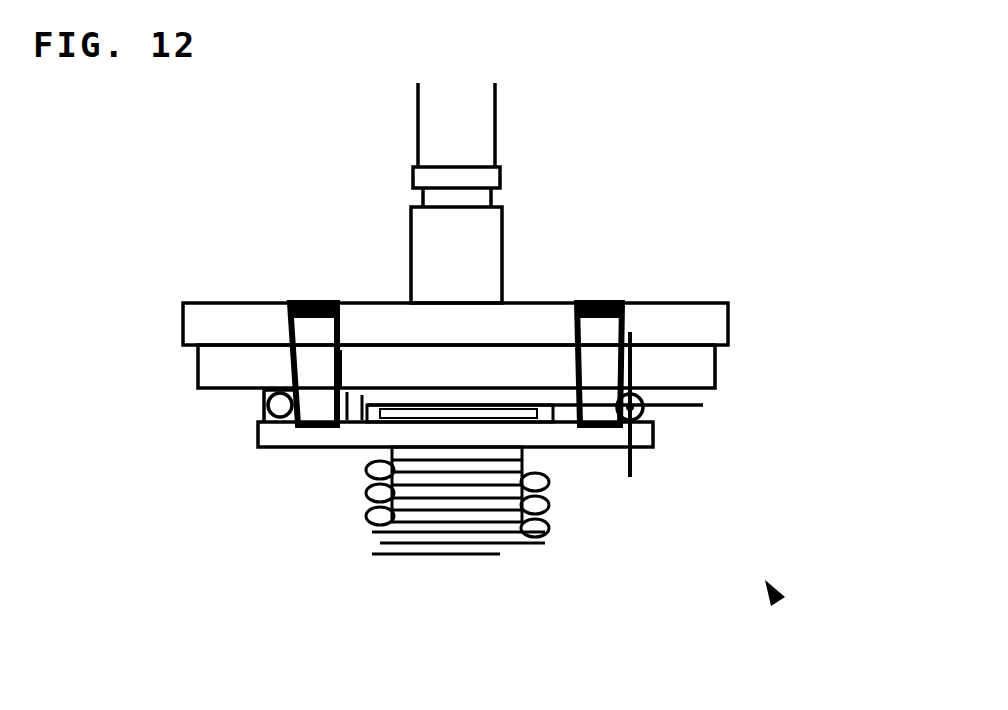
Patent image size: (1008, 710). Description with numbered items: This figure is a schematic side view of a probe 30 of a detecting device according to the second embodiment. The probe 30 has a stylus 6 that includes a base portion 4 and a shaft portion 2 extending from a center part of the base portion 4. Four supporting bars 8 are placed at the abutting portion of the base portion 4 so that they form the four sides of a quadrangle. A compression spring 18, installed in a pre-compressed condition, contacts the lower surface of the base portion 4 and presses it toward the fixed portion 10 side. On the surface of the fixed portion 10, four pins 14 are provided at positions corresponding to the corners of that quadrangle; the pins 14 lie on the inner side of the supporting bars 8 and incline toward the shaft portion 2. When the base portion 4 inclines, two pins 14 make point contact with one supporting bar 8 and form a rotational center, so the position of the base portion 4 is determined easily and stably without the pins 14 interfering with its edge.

The shaft portion 2 is at (440, 259).
The base portion 4 is at (310, 437).
The stylus 6 is at (125, 247).
The supporting bars 8 is at (650, 438).
The fixed portion 10 is at (693, 322).
The pins 14 is at (593, 395).
The compression spring 18 is at (497, 532).
The probe 30 is at (778, 600).